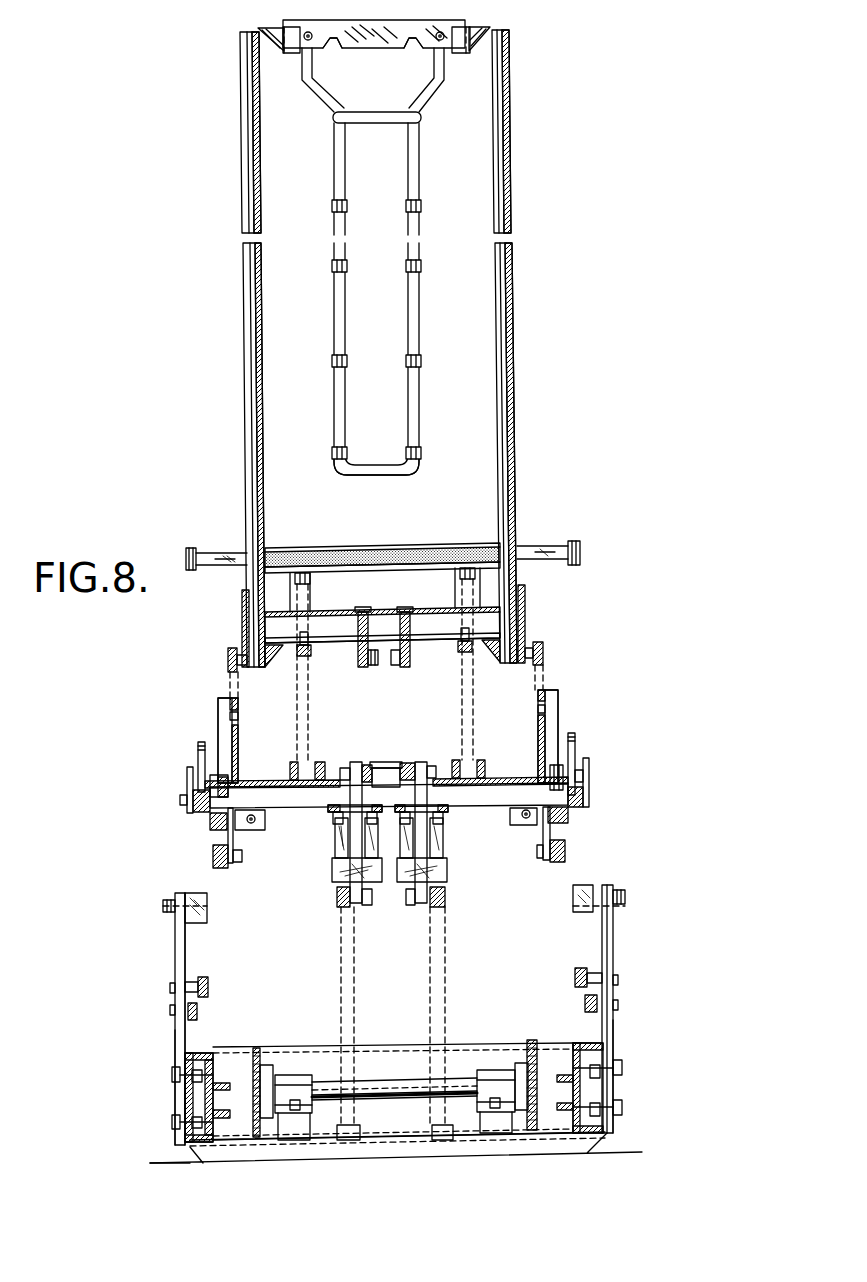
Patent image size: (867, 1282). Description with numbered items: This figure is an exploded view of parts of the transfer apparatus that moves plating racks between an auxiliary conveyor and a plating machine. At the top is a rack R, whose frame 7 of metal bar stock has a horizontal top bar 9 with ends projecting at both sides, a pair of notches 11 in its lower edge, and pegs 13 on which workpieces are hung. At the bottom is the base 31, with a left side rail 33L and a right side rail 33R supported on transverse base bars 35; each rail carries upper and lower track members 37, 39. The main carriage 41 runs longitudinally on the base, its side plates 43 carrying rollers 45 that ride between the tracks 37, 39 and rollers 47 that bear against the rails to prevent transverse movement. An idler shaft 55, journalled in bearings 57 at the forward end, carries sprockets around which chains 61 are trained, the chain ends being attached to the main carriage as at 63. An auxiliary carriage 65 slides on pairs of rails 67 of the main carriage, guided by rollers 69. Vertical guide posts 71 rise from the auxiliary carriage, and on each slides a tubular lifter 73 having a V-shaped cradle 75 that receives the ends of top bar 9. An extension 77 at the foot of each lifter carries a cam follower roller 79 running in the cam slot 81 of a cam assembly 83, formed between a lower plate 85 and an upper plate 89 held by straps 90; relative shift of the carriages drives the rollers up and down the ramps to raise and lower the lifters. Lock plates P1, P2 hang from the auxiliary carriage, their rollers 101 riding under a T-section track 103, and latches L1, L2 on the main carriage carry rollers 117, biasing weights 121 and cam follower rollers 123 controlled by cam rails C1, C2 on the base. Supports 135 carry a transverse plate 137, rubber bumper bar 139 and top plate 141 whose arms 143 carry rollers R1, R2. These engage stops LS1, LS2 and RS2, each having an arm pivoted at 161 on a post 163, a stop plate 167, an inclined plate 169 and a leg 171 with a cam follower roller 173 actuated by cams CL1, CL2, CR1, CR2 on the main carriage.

The frame 7 is at (340, 475).
The top bar 9 is at (366, 45).
The notches 11 is at (331, 48).
The pegs 13 is at (332, 206).
The rack R is at (327, 316).
The base 31 is at (182, 1159).
The left side rail 33L is at (213, 1053).
The right side rail 33R is at (576, 1045).
The transverse base bars 35 is at (400, 1156).
The upper horizontal track member 37 is at (222, 1083).
The lower horizontal track member 39 is at (222, 1118).
The main carriage 41 is at (482, 808).
The side plates 43 is at (234, 835).
The rollers 45 is at (213, 857).
The rollers 47 is at (210, 822).
The idler shaft 55 is at (402, 1085).
The bearings 57 is at (296, 1075).
The chains 61 is at (257, 1048).
The chain attachment 63 is at (265, 821).
The auxiliary carriage 65 is at (431, 610).
The rails 67 is at (294, 762).
The rollers 69 is at (298, 656).
The vertical guide posts 71 is at (246, 401).
The lifter 73 is at (243, 296).
The V-shaped cradle 75 is at (292, 53).
The extension 77 is at (243, 618).
The cam follower roller 79 is at (231, 655).
The cam slot 81 is at (247, 715).
The cam assembly 83 is at (210, 705).
The lower vertical plate 85 is at (238, 740).
The upper vertical plate 89 is at (238, 700).
The straps 90 is at (218, 720).
The rollers 101 is at (378, 662).
The T-section track 103 is at (385, 762).
The roller 117 is at (355, 765).
The biasing weight 121 is at (332, 872).
The cam follower roller 123 is at (340, 900).
The supports 135 is at (310, 580).
The transverse plate 137 is at (370, 573).
The rubber bumper bar 139 is at (432, 547).
The top plate 141 is at (370, 548).
The arms 143 is at (226, 555).
The pivot 161 is at (163, 905).
The post 163 is at (175, 1031).
The stop plate 167 is at (207, 908).
The inclined plate 169 is at (573, 898).
The leg 171 is at (186, 946).
The cam follower roller 173 is at (197, 1008).
The roller R1 is at (191, 548).
The roller R2 is at (576, 541).
The left lock plate P1 is at (358, 640).
The right lock plate P2 is at (410, 640).
The first left cam CL1 is at (198, 748).
The second left cam CL2 is at (187, 772).
The first right cam CR1 is at (577, 742).
The second right cam CR2 is at (590, 764).
The latch L1 is at (360, 910).
The latch L2 is at (428, 910).
The stop LS1 is at (168, 939).
The stop LS2 is at (167, 1005).
The stop RS2 is at (621, 943).
The cam rail C1 is at (350, 1125).
The cam rail C2 is at (445, 1125).